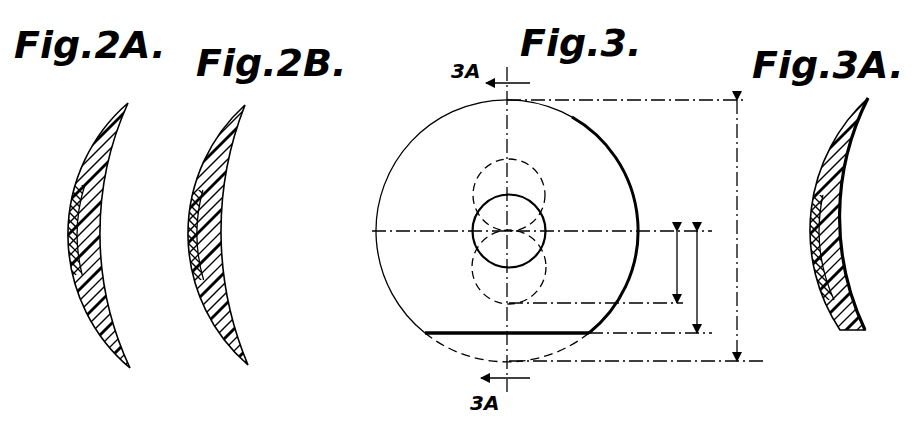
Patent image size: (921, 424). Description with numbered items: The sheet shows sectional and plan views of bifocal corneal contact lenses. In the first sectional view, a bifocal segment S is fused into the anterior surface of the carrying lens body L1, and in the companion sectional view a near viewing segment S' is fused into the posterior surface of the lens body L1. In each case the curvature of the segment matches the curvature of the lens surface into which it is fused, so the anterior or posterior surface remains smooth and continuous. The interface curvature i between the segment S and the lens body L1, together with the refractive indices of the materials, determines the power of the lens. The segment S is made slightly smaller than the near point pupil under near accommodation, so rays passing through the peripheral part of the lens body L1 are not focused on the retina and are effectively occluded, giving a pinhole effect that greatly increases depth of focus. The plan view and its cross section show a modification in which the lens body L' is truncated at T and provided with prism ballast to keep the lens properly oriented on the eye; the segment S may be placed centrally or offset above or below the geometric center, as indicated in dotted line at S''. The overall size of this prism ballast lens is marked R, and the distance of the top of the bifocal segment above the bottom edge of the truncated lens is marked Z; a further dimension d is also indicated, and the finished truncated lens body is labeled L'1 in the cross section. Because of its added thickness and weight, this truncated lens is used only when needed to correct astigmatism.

In FIG. 2A, the lens body L1 is at (80, 297).
In FIG. 2B, the lens body L1 is at (218, 283).
In FIG. 2A, the bifocal segment S is at (106, 225).
In FIG. 3, the bifocal segment S is at (516, 223).
In FIG. 3A, the bifocal segment S is at (802, 245).
In FIG. 2B, the near viewing segment S' is at (186, 225).
In FIG. 2A, the interface curvature i is at (80, 203).
In FIG. 2B, the interface curvature i is at (208, 205).
In FIG. 3, the lens body L' is at (485, 231).
In FIG. 3, the finished lens L'1 is at (572, 214).
In FIG. 3A, the finished lens L'1 is at (745, 214).
In FIG. 3, the offset bifocal segment S'' is at (591, 260).
In FIG. 3, the truncation T is at (462, 336).
In FIG. 3, the distance d is at (677, 240).
In FIG. 3, the distance of top of bifocal segment above bottom edge Z is at (700, 293).
In FIG. 3, the overall size of prism ballast bifocal lens R is at (738, 182).